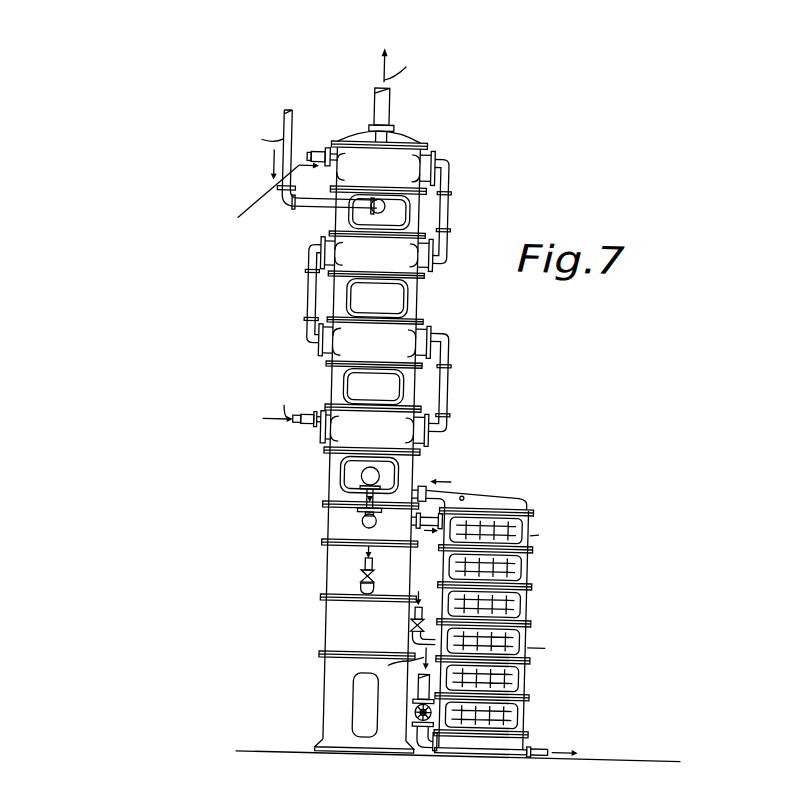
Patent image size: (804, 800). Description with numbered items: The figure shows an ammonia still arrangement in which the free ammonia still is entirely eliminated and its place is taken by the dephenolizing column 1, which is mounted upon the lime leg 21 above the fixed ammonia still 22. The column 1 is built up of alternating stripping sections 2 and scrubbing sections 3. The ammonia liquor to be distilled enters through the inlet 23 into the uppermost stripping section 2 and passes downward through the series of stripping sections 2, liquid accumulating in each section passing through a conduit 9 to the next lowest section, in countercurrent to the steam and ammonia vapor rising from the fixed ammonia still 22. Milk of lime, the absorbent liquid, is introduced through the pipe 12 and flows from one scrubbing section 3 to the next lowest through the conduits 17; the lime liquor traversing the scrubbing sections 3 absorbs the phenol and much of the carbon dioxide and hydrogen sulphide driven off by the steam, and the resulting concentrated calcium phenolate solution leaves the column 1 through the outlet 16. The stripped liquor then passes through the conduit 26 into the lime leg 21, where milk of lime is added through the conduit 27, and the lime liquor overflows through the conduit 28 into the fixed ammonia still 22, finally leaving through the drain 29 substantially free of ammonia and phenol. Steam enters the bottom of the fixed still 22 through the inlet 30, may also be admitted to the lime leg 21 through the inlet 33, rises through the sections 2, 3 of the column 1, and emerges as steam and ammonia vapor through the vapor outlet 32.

The dephenolizing column 1 is at (482, 299).
The stripping section 2 is at (330, 190).
The scrubbing section 3 is at (414, 146).
The conduit 9 is at (342, 383).
The pipe 12 is at (310, 151).
The outlet 16 is at (302, 433).
The conduit 17 is at (442, 211).
The lime leg 21 is at (330, 576).
The fixed ammonia still 22 is at (531, 567).
The inlet 23 is at (283, 120).
The conduit 26 is at (356, 474).
The conduit 27 is at (376, 568).
The conduit 28 is at (428, 534).
The drain 29 is at (545, 745).
The inlet 30 is at (433, 737).
The vapor outlet 32 is at (382, 100).
The inlet 33 is at (423, 611).